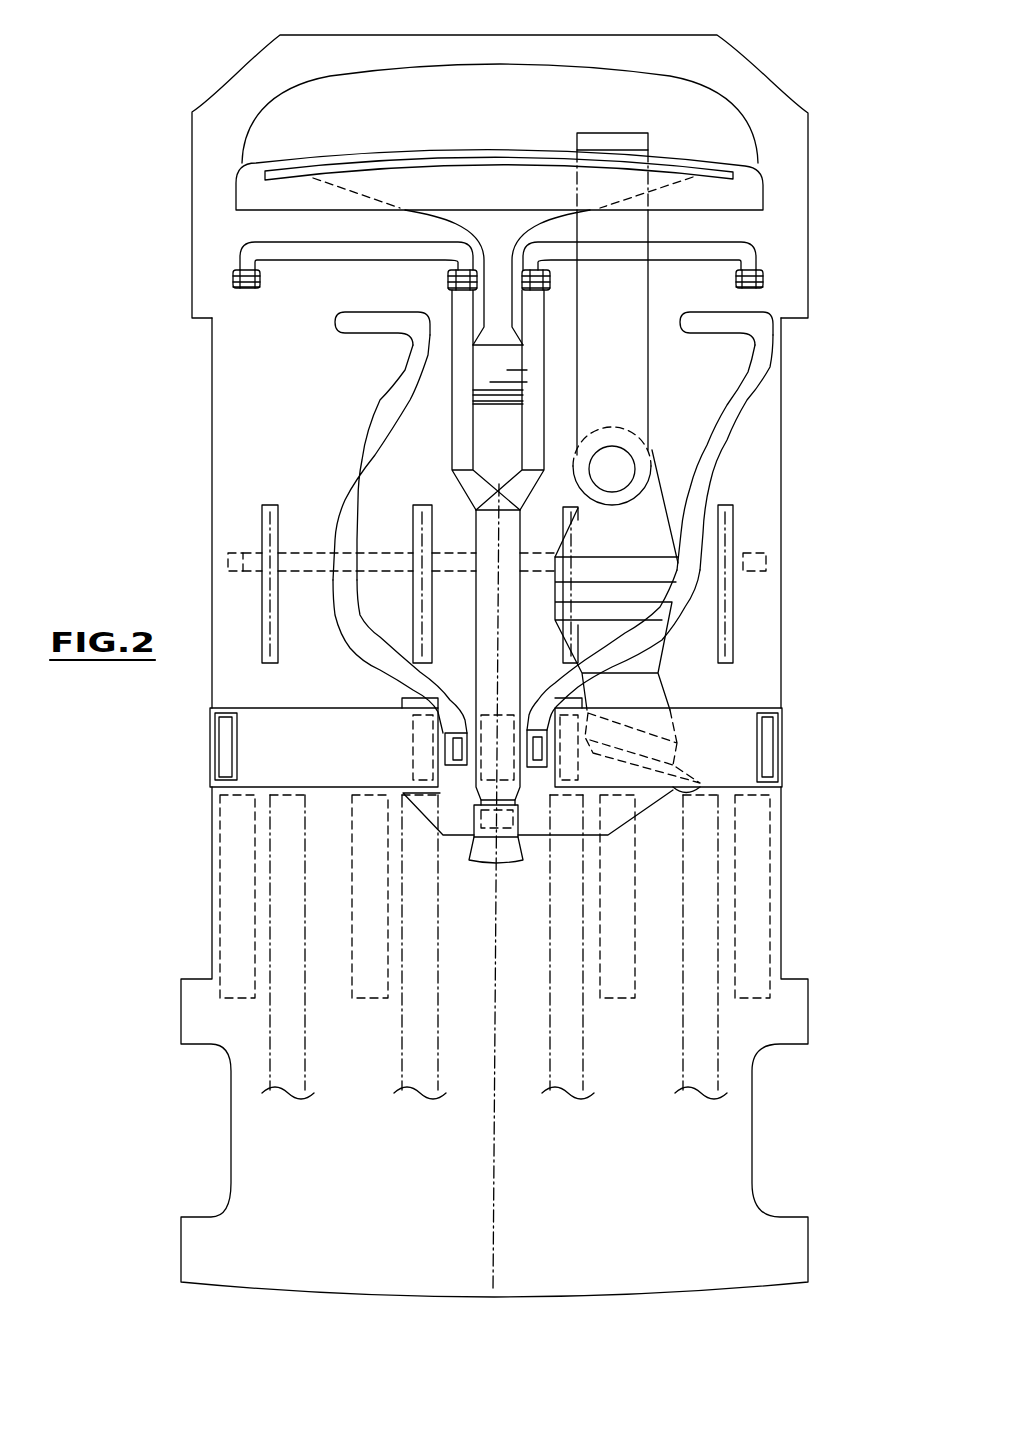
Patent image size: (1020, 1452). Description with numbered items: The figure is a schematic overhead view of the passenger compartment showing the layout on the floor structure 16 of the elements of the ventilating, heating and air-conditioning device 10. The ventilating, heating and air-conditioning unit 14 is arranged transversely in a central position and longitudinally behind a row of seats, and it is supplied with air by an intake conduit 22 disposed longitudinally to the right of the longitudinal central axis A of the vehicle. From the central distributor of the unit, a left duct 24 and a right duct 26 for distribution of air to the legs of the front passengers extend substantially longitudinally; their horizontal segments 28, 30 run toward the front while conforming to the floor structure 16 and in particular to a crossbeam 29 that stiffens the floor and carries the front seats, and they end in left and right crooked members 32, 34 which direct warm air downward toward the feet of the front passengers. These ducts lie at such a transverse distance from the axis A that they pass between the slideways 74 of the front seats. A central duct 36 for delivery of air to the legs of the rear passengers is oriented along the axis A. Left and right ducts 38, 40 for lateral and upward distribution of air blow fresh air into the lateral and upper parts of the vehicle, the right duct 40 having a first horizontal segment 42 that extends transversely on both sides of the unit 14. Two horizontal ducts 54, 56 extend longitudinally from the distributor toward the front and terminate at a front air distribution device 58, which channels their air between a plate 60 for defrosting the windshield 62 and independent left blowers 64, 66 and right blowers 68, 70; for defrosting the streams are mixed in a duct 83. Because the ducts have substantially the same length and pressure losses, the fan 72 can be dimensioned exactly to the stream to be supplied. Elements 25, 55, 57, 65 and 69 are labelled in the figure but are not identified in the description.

The ventilating, heating and air-conditioning device 10 is at (150, 170).
The ventilating, heating and air-conditioning unit 14 is at (541, 850).
The floor structure 16 is at (228, 655).
The intake conduit 22 is at (660, 298).
The left duct for distribution of air to the legs of the front passengers 24 is at (340, 450).
The column member 25 is at (623, 395).
The right duct for distribution of air to the legs of the front passengers 26 is at (740, 440).
The horizontal segment 28 is at (342, 583).
The crossbeam 29 is at (236, 550).
The horizontal segment 30 is at (707, 466).
The left crooked member 32 is at (380, 329).
The right crooked member 34 is at (727, 328).
The central duct for delivery of air to the legs of the rear passengers 36 is at (483, 867).
The left duct for lateral and upward distribution of air 38 is at (348, 690).
The right duct for lateral and upward distribution of air 40 is at (724, 696).
The first horizontal segment 42 is at (730, 768).
The left horizontal duct 54 is at (465, 520).
The rod 55 is at (478, 595).
The right horizontal duct 56 is at (528, 548).
The ratchet member 57 is at (513, 610).
The front air distribution device 58 is at (432, 410).
The defrosting plate 60 is at (750, 190).
The windshield 62 is at (602, 90).
The left blower 64 is at (235, 279).
The left tube 65 is at (328, 252).
The left blower 66 is at (448, 280).
The right blower 68 is at (572, 296).
The right tube 69 is at (668, 244).
The right blower 70 is at (763, 279).
The fan 72 is at (653, 473).
The slideways 74 is at (262, 530).
The duct 83 is at (460, 221).
The longitudinal central axis A is at (493, 1252).